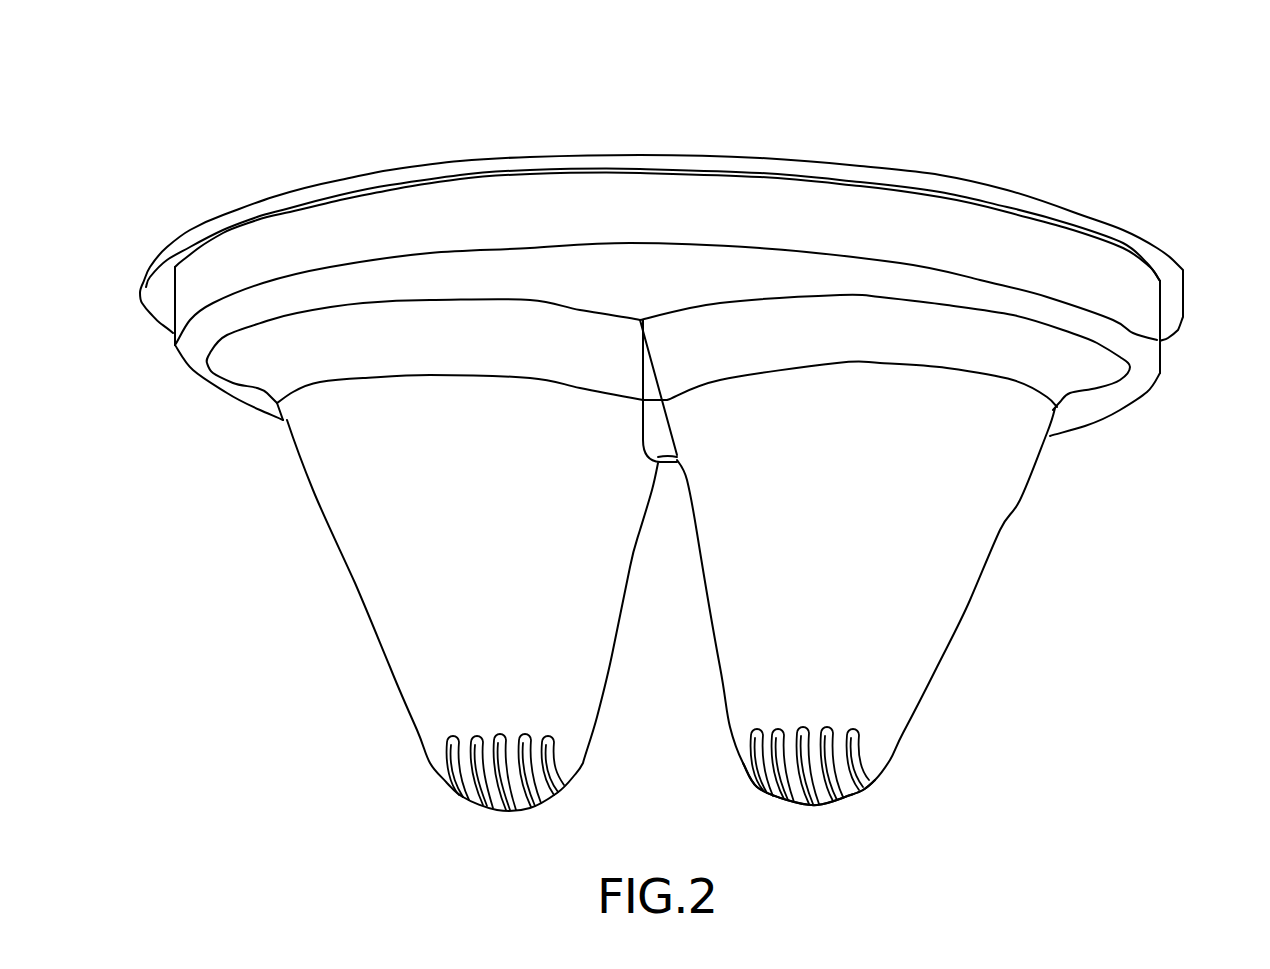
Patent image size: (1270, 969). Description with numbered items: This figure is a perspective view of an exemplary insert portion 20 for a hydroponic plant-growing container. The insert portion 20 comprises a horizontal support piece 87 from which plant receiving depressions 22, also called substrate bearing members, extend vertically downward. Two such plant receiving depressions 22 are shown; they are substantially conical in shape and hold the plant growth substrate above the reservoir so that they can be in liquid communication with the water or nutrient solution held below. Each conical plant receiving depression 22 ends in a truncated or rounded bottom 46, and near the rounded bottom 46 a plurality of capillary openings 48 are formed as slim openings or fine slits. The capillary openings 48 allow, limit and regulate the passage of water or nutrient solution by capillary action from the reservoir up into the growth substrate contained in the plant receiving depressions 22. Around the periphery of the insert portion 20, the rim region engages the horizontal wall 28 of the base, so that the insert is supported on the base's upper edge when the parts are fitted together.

The insert portion 20 is at (1080, 110).
The plant receiving depressions 22 is at (355, 583).
The horizontal wall 28 is at (1133, 312).
The rounded bottom 46 is at (875, 770).
The capillary openings 48 is at (872, 787).
The horizontal support piece 87 is at (677, 282).